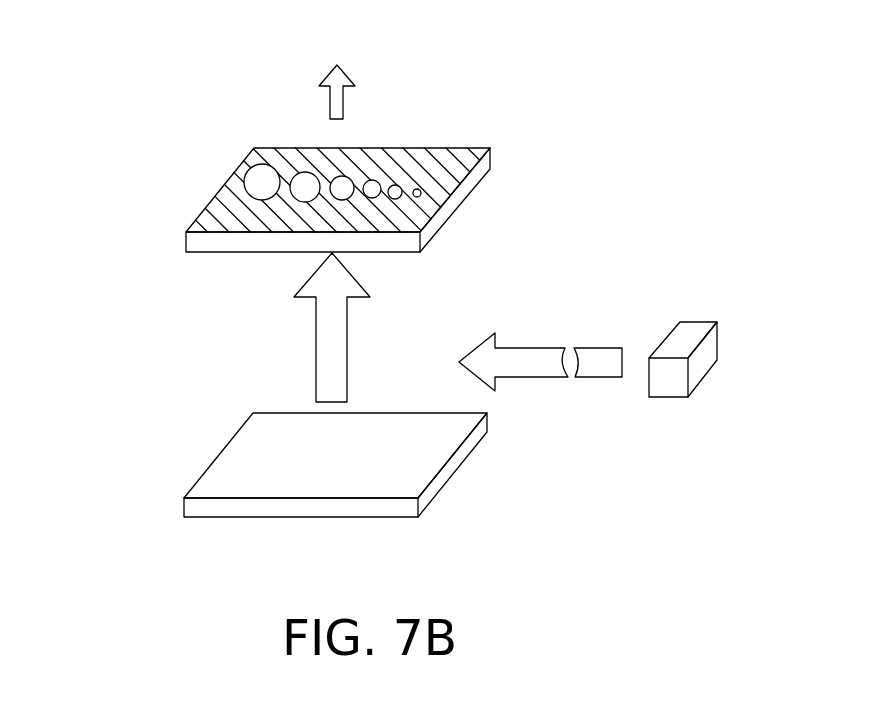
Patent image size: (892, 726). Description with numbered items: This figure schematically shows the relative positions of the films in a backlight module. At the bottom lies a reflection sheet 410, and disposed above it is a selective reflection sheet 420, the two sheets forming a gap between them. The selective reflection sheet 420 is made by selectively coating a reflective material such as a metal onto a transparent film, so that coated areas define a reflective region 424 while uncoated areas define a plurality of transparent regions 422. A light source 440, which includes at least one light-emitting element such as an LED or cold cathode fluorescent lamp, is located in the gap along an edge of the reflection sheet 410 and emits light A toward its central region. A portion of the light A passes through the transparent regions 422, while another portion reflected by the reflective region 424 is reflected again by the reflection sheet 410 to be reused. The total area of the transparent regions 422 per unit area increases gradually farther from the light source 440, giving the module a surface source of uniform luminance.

The reflection sheet 410 is at (225, 482).
The selective reflection sheet 420 is at (457, 207).
The transparent regions 422 is at (343, 186).
The reflective region 424 is at (467, 158).
The light source 440 is at (668, 397).
The light A is at (347, 348).